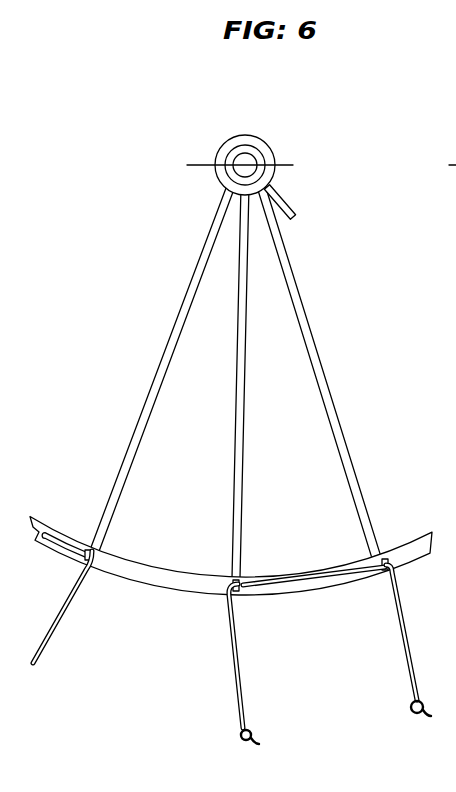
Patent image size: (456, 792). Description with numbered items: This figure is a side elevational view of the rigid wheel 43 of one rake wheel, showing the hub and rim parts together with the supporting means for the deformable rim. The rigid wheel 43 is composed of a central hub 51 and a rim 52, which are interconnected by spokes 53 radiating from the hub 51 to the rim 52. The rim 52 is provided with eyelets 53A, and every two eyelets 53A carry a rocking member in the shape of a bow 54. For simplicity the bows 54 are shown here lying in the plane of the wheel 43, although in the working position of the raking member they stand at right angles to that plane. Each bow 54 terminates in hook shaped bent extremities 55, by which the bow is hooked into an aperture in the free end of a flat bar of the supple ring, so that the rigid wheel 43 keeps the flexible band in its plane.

The rigid wheel 43 is at (337, 336).
The hub 51 is at (272, 168).
The rim 52 is at (117, 565).
The spokes 53 is at (243, 465).
The eyelets 53A is at (240, 597).
The bow 54 is at (323, 570).
The hook shaped bent extremities 55 is at (346, 727).